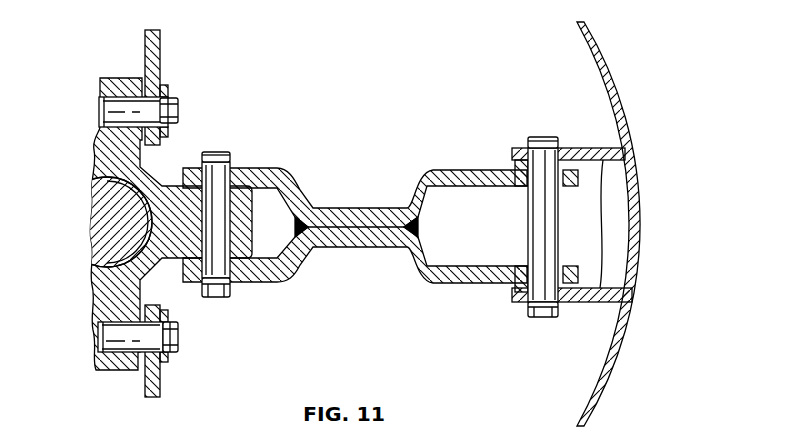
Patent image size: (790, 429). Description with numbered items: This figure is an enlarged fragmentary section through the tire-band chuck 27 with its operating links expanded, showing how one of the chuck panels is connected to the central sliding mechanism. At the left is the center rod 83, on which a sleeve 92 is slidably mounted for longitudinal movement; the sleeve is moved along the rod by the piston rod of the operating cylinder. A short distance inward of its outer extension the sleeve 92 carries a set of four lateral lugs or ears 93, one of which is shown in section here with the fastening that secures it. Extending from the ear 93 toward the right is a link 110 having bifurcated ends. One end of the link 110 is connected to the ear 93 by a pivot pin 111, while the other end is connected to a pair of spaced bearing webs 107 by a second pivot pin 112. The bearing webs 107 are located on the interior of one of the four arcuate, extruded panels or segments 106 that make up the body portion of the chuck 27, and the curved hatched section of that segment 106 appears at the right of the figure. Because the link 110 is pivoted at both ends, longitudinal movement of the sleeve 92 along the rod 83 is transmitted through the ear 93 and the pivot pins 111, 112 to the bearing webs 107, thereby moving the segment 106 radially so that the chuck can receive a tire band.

The chuck 27 is at (122, 378).
The rod 83 is at (102, 243).
The sleeve 92 is at (161, 186).
The lateral lugs or ears 93 is at (149, 206).
The arcuate panels or segments 106 is at (617, 82).
The bearing webs 107 is at (605, 160).
The link 110 is at (157, 73).
The pivot pin 111 is at (215, 152).
The pivot pin 112 is at (556, 138).